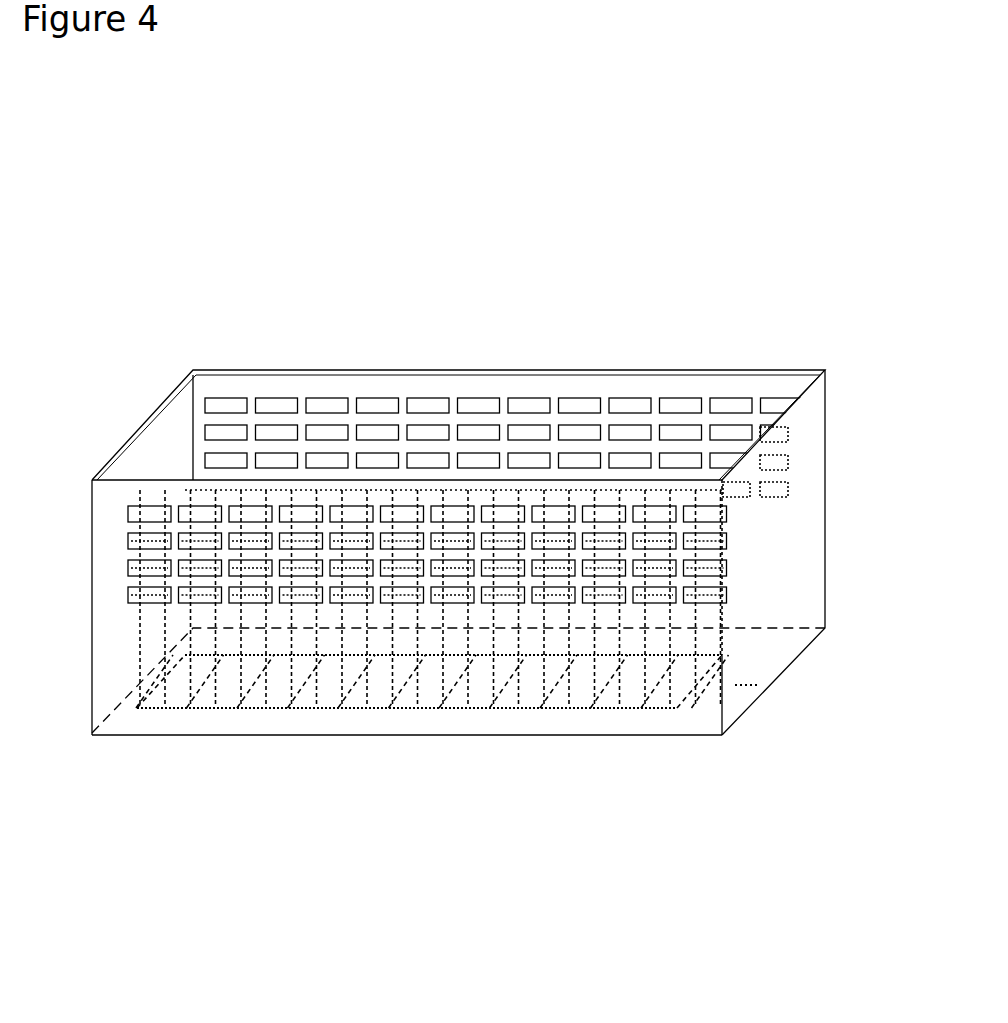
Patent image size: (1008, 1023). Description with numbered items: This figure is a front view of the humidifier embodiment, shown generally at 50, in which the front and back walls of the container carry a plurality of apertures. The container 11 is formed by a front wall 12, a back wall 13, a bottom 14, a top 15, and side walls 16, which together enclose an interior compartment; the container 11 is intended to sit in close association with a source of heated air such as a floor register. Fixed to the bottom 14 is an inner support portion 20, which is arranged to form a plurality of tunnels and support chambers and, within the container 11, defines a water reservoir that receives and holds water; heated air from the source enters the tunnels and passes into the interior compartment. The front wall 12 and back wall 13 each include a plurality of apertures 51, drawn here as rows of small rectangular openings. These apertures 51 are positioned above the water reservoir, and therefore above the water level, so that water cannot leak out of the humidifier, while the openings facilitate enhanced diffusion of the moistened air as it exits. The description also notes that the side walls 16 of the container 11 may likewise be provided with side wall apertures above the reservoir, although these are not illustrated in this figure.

The humidifier embodiment with apertured walls 50 is at (232, 247).
The apertures 51 is at (490, 390).
The top 15 is at (792, 377).
The side walls 16 is at (141, 440).
The back wall 13 is at (815, 418).
The container 11 is at (115, 597).
The bottom 14 is at (760, 685).
The front wall 12 is at (688, 723).
The inner support portion 20 is at (340, 705).